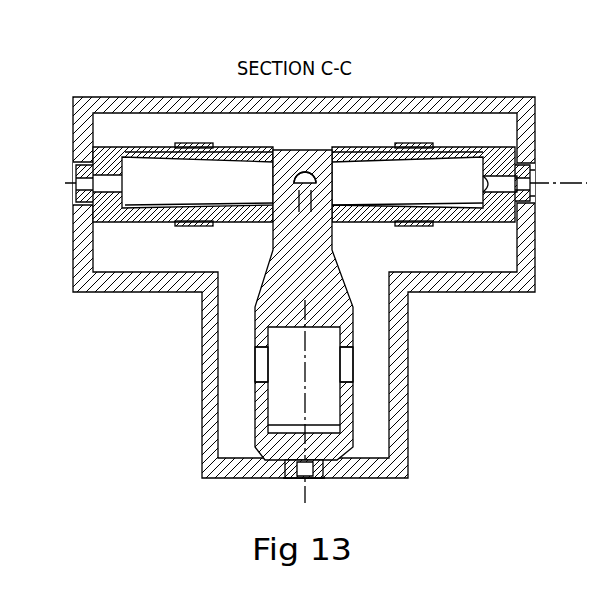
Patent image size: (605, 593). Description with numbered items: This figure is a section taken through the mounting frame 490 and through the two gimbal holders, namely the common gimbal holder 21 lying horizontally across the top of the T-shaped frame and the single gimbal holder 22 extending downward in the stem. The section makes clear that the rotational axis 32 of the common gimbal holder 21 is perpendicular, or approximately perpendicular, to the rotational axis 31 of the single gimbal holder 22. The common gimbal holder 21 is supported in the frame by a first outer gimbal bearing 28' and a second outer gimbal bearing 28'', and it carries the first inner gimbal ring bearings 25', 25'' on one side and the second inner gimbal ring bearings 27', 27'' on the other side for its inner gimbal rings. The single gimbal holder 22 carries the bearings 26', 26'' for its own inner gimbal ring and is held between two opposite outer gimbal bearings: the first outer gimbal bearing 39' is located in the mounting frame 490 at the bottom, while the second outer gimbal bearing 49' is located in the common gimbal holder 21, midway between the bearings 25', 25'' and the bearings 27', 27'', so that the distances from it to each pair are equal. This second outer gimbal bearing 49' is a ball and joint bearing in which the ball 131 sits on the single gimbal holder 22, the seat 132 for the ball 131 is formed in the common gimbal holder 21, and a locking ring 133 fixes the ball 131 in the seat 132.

The mounting frame 490 is at (467, 282).
The rotational axis of the common gimbal holder 32 is at (550, 185).
The second outer gimbal bearing 28'' is at (56, 196).
The first outer gimbal bearing 28' is at (548, 170).
The seat 132 is at (280, 150).
The second inner gimbal ring bearing 27'' is at (152, 96).
The second inner gimbal ring bearing 27' is at (155, 280).
The ball 131 is at (305, 232).
The common gimbal holder 21 is at (463, 150).
The first inner gimbal ring bearing 25'' is at (446, 93).
The first inner gimbal ring bearing 25' is at (490, 154).
The locking ring 133 is at (325, 222).
The single gimbal holder 22 is at (347, 423).
The second outer gimbal bearing 49' is at (358, 97).
The bearing for the inner gimbal ring of the single gimbal holder 26'' is at (201, 368).
The bearing for the inner gimbal ring of the single gimbal holder 26' is at (412, 381).
The rotational axis of the single gimbal holder 31 is at (305, 483).
The first outer gimbal bearing 39' is at (252, 499).